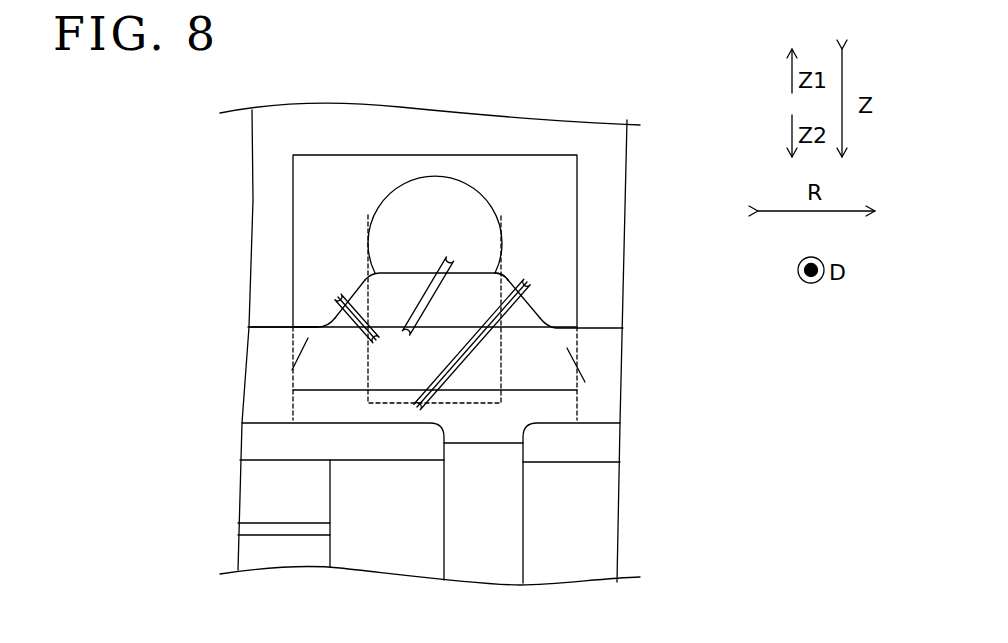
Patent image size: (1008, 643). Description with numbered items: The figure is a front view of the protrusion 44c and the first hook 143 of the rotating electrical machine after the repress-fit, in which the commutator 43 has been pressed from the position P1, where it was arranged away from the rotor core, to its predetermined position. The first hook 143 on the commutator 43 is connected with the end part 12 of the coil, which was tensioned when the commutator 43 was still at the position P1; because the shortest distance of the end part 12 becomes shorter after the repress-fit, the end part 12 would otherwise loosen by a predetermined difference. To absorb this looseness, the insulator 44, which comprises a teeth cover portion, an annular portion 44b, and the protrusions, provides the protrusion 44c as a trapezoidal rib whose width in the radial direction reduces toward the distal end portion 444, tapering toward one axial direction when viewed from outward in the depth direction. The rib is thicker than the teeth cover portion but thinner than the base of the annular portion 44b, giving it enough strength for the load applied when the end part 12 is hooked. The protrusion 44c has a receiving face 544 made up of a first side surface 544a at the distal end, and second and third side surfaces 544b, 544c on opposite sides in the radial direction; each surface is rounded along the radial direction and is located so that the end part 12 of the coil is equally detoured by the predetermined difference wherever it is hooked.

The commutator 43 is at (523, 130).
The first hook 143 is at (433, 200).
The distal end portion 444 is at (380, 268).
The receiving face 544 is at (445, 287).
The first side surface 544a is at (473, 271).
The second side surface 544b is at (345, 292).
The third side surface 544c is at (535, 311).
The insulator 44 is at (240, 423).
The annular portion 44b is at (258, 336).
The protrusion 44c is at (510, 276).
The end part of the coil 12 is at (372, 338).
The position P1 is at (268, 193).